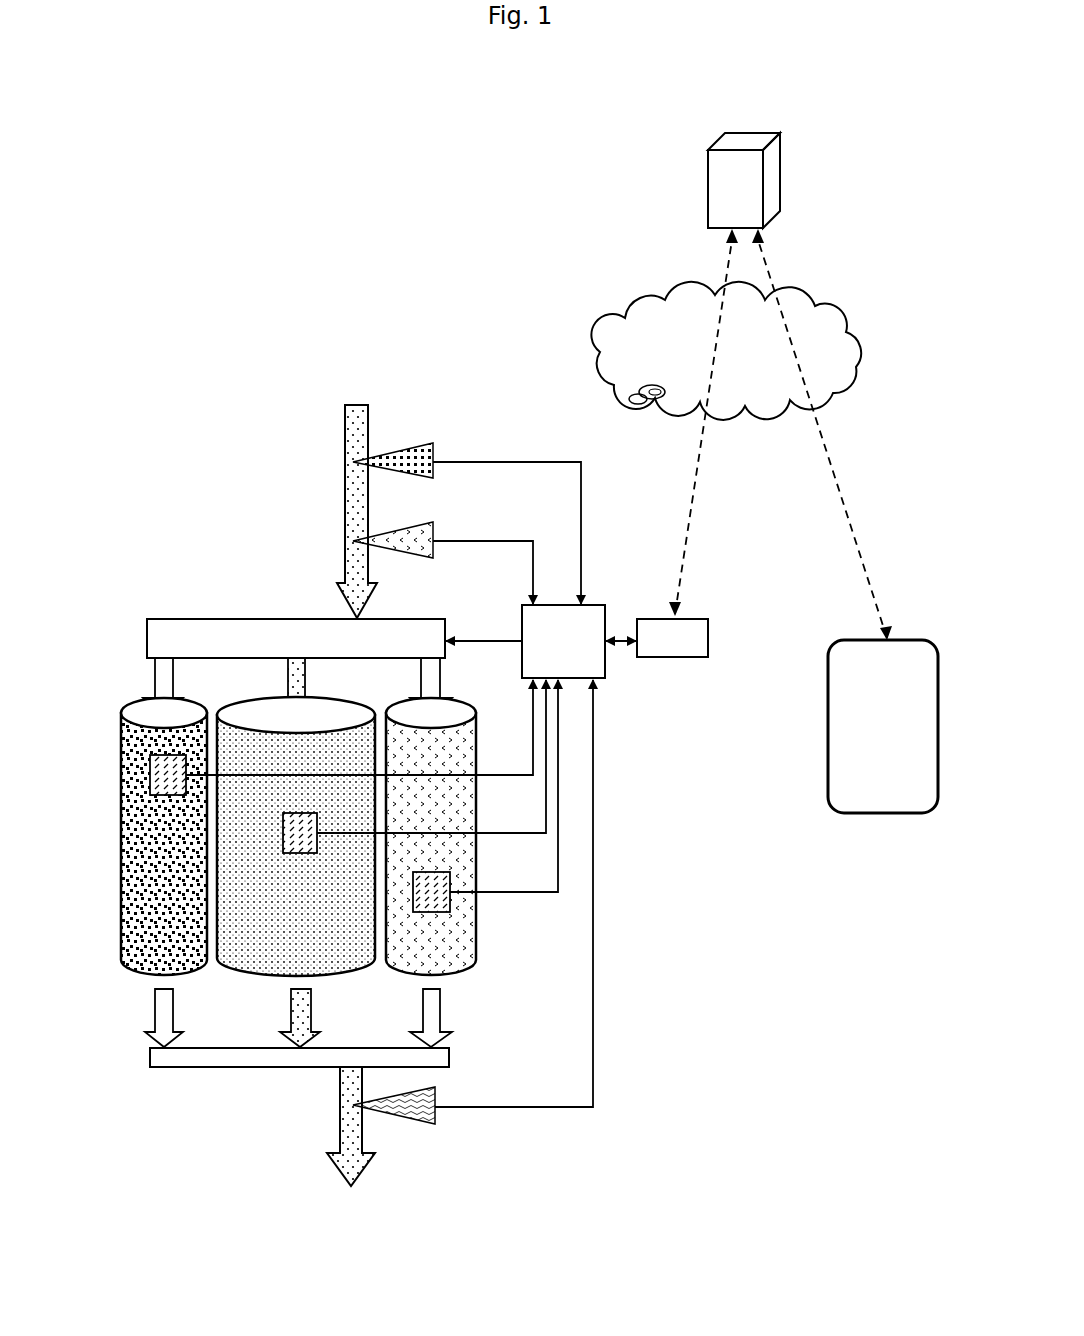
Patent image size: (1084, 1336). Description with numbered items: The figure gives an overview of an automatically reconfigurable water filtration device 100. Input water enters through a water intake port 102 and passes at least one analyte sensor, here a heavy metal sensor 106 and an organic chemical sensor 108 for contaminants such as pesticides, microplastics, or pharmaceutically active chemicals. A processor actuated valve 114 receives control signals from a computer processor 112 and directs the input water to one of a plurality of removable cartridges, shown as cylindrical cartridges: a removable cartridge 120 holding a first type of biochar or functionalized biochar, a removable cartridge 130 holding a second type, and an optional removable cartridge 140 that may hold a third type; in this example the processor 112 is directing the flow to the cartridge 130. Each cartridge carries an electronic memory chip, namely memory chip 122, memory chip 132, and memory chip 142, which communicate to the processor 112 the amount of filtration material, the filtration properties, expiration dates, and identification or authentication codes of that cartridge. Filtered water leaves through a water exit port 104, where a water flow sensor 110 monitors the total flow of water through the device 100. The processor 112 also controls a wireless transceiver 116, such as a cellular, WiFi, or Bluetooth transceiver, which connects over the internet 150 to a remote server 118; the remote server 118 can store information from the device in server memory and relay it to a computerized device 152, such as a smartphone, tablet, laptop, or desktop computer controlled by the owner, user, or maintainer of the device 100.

The automatically reconfigurable water filtration device 100 is at (583, 1203).
The water intake port 102 is at (352, 398).
The water exit port 104 is at (313, 1168).
The heavy metal sensor 106 is at (408, 440).
The organic chemical sensor 108 is at (440, 533).
The water flow sensor 110 is at (405, 1127).
The computer processor 112 is at (525, 641).
The processor actuated valve 114 is at (297, 668).
The wireless transceiver 116 is at (656, 638).
The remote server 118 is at (780, 386).
The removable cartridge 120 is at (110, 931).
The memory chip 122 is at (152, 760).
The removable cartridge 130 is at (262, 987).
The memory chip 132 is at (300, 858).
The removable cartridge 140 is at (490, 948).
The memory chip 142 is at (430, 888).
The internet 150 is at (726, 351).
The computerized device 152 is at (883, 726).